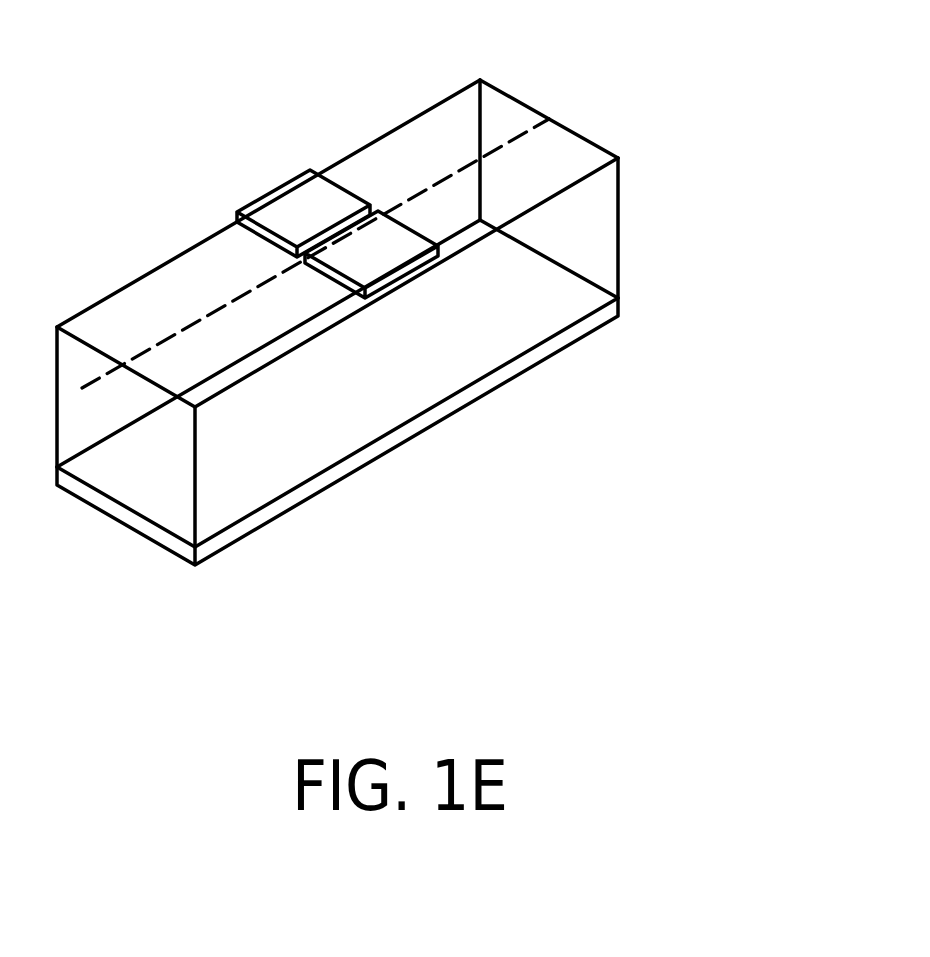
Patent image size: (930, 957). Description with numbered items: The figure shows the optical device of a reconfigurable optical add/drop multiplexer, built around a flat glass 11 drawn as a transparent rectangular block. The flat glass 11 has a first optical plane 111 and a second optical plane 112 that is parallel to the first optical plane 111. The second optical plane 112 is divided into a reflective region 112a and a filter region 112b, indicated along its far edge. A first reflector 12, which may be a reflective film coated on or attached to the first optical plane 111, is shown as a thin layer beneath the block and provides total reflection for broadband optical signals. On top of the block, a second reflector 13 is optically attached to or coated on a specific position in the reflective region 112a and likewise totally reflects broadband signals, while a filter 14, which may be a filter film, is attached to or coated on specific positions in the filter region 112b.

The flat glass 11 is at (386, 279).
The first optical plane 111 is at (517, 317).
The second optical plane 112 is at (442, 128).
The reflective region 112a is at (539, 89).
The filter region 112b is at (582, 103).
The first reflector 12 is at (407, 437).
The second reflector 13 is at (263, 215).
The filter 14 is at (367, 238).